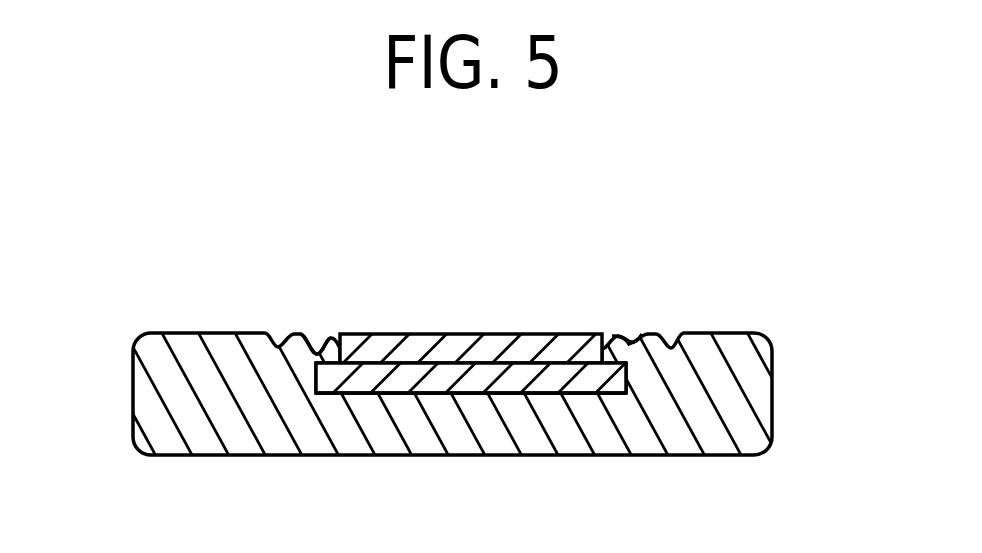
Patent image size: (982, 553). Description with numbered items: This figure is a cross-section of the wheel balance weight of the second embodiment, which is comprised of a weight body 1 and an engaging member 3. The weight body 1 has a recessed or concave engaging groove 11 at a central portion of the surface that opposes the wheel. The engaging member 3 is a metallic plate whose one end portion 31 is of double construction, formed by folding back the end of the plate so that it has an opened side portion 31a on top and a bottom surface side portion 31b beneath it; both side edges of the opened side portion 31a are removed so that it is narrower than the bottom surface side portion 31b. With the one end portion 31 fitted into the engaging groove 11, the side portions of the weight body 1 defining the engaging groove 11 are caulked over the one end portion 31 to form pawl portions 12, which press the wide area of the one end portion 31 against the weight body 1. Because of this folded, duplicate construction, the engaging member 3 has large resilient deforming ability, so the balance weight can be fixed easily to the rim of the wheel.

The weight body 1 is at (738, 378).
The engaging groove 11 is at (487, 385).
The pawl portion 12 is at (322, 345).
The engaging member 3 is at (476, 339).
The one end portion 31 is at (476, 339).
The opened side portion 31a is at (404, 350).
The bottom surface side portion 31b is at (362, 384).